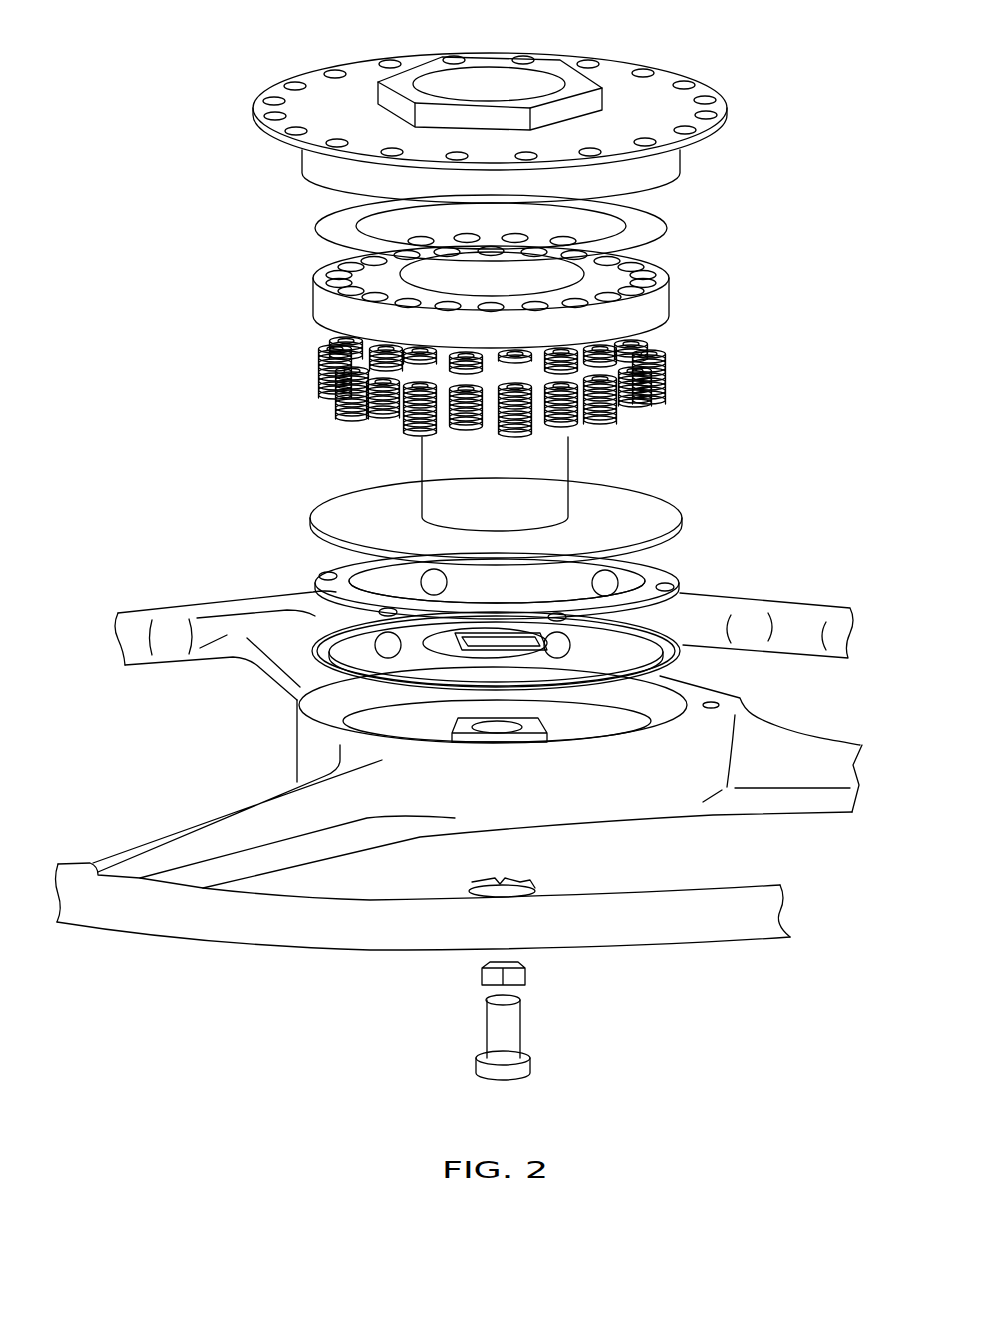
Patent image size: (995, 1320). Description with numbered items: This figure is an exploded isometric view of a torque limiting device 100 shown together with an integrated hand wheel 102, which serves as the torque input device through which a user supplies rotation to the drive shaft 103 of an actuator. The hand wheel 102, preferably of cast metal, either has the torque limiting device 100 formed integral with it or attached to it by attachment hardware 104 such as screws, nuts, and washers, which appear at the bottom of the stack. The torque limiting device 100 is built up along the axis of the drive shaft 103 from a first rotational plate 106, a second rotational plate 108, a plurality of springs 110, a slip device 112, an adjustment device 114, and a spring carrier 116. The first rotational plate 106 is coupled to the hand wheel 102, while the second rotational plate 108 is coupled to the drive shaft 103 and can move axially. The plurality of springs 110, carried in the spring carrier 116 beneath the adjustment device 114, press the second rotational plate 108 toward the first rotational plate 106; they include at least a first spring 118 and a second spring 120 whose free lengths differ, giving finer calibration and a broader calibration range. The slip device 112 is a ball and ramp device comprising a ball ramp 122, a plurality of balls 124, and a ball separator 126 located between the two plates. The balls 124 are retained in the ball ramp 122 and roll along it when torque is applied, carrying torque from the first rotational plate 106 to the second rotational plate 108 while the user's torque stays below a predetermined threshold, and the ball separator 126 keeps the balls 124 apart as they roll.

The torque limiting device 100 is at (782, 53).
The hand wheel 102 is at (281, 728).
The drive shaft 103 is at (573, 452).
The attachment hardware 104 is at (463, 858).
The first rotational plate 106 is at (472, 658).
The second rotational plate 108 is at (333, 505).
The plurality of springs 110 is at (416, 406).
The slip device 112 is at (405, 541).
The adjustment device 114 is at (645, 88).
The spring carrier 116 is at (297, 293).
The first spring 118 is at (468, 406).
The second spring 120 is at (386, 428).
The ball ramp 122 is at (672, 650).
The balls 124 is at (618, 583).
The ball separator 126 is at (464, 581).